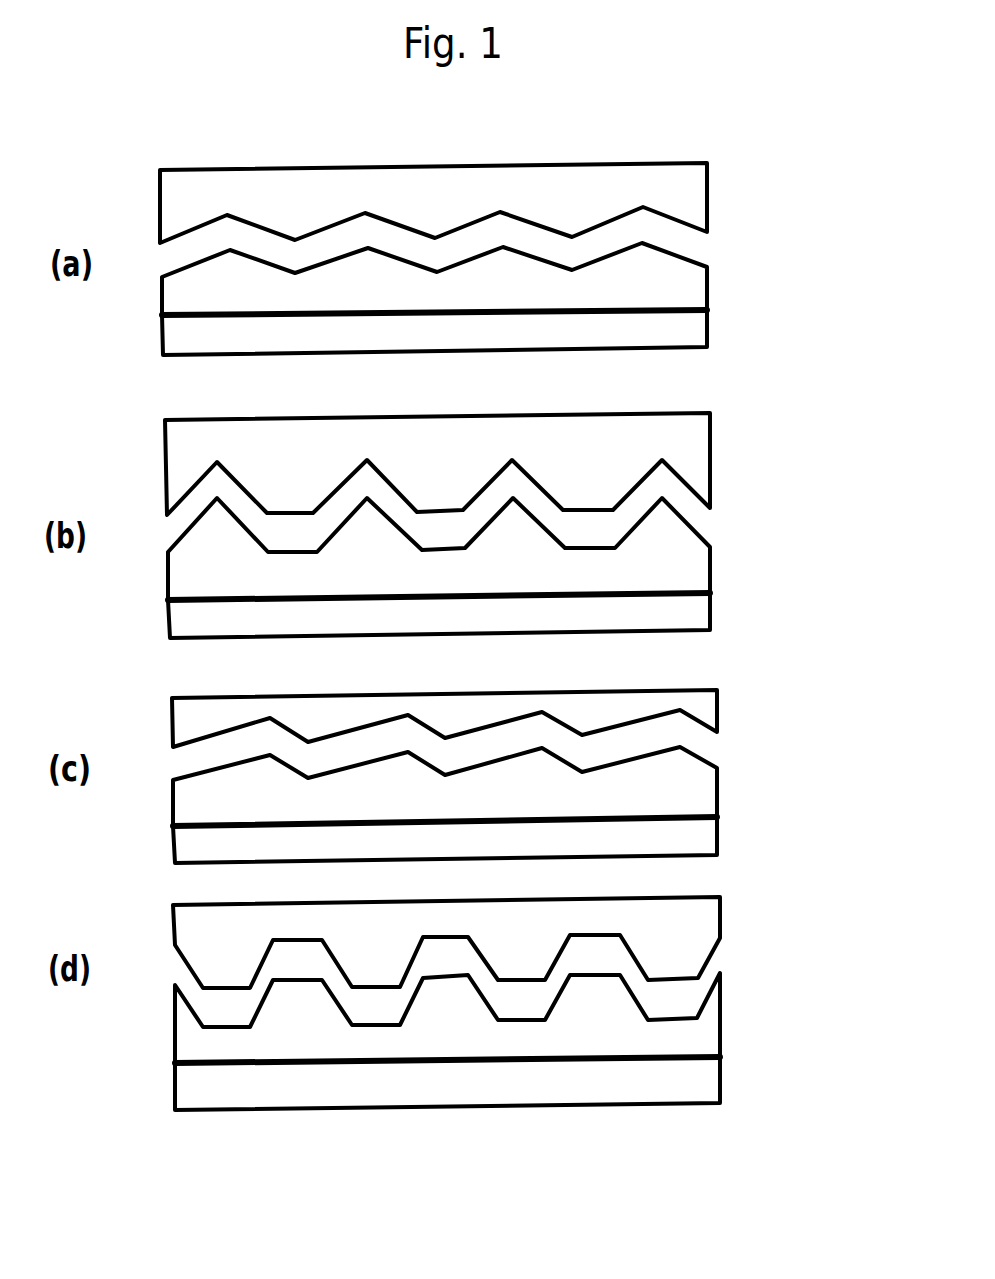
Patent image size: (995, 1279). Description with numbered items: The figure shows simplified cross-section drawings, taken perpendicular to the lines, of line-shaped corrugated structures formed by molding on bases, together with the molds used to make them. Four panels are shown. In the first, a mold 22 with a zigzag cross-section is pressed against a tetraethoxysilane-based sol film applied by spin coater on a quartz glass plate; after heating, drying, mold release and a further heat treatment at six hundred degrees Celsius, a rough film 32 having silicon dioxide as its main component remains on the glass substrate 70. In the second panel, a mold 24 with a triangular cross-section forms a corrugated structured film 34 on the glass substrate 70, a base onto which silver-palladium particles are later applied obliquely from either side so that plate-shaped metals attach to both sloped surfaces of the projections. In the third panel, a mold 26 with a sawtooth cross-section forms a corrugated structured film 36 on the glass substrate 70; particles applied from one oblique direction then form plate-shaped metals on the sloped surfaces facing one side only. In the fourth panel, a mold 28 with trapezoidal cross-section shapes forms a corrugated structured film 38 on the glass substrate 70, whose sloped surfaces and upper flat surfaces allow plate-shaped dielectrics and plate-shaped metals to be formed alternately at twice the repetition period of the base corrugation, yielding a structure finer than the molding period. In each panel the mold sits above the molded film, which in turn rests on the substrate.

The mold 22 is at (685, 192).
The rough film 32 is at (693, 287).
The mold 24 is at (690, 453).
The corrugated structured film 34 is at (693, 573).
The mold 26 is at (702, 710).
The corrugated structured film 36 is at (700, 797).
The mold 28 is at (700, 923).
The corrugated structured film 38 is at (712, 1013).
The glass substrate 70 is at (693, 333).